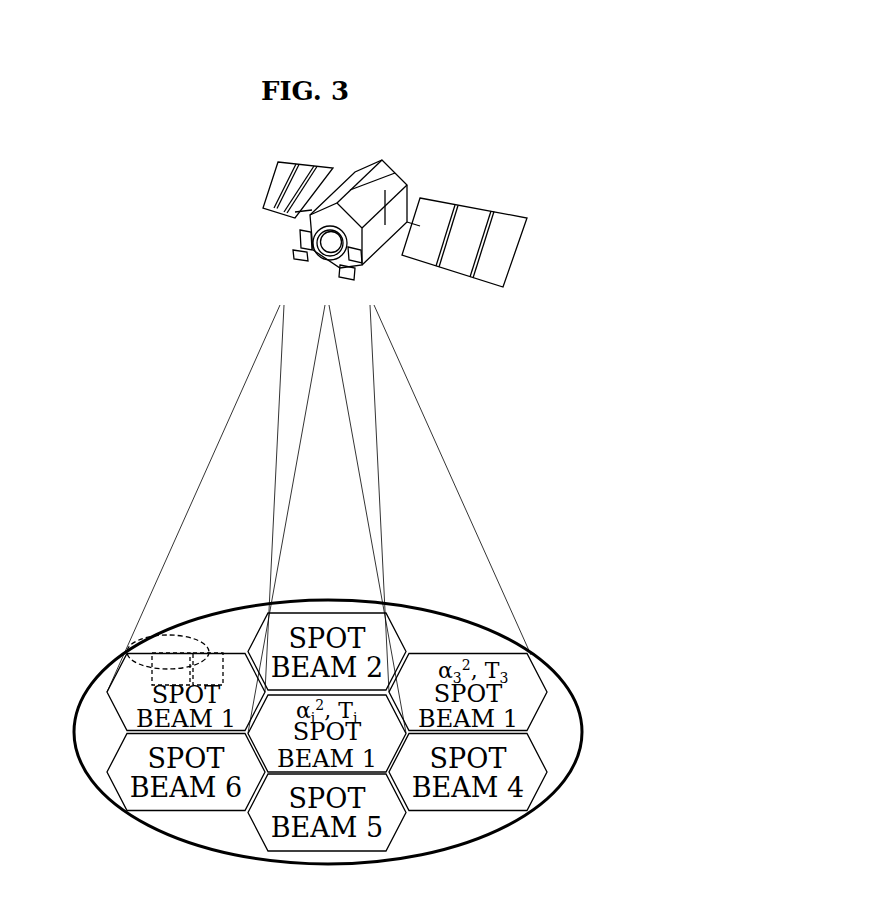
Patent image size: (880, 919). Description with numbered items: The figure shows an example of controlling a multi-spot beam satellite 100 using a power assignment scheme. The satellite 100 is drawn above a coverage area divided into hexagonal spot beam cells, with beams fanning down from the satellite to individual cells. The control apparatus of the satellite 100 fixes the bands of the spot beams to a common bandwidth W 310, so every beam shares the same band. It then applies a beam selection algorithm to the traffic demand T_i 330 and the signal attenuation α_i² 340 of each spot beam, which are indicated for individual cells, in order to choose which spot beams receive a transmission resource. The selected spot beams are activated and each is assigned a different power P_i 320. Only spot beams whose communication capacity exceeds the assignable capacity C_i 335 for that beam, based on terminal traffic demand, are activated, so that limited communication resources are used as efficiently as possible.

The satellite 100 is at (397, 173).
The band W 310 is at (265, 292).
The power P_i 320 is at (237, 412).
The channel C 335 is at (205, 555).
The traffic demand T_i 330 is at (133, 639).
The signal attenuation α_i² 340 is at (128, 654).